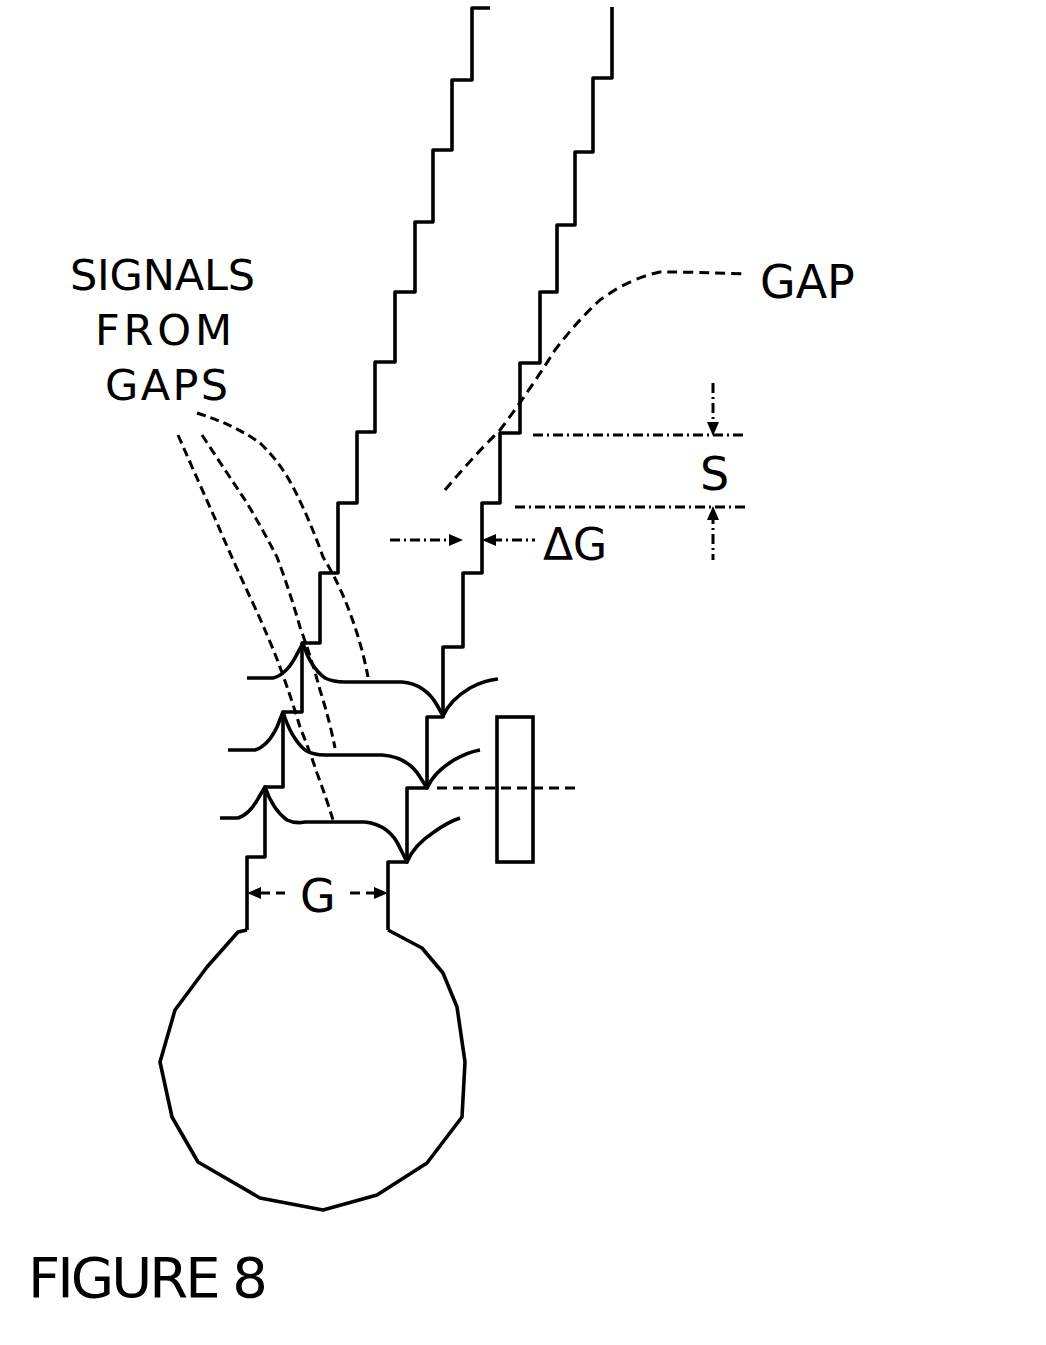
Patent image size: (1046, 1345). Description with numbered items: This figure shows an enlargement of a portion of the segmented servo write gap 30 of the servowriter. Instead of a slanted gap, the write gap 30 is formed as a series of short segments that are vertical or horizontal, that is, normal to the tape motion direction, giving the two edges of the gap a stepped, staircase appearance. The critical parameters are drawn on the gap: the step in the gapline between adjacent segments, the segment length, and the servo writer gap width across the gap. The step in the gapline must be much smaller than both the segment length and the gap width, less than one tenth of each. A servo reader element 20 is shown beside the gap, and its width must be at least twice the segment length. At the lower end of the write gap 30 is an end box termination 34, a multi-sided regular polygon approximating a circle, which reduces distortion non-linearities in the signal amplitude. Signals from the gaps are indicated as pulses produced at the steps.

The segmented servo write gap 30 is at (515, 63).
The servo reader element 20 is at (513, 845).
The end box termination 34 is at (335, 1050).